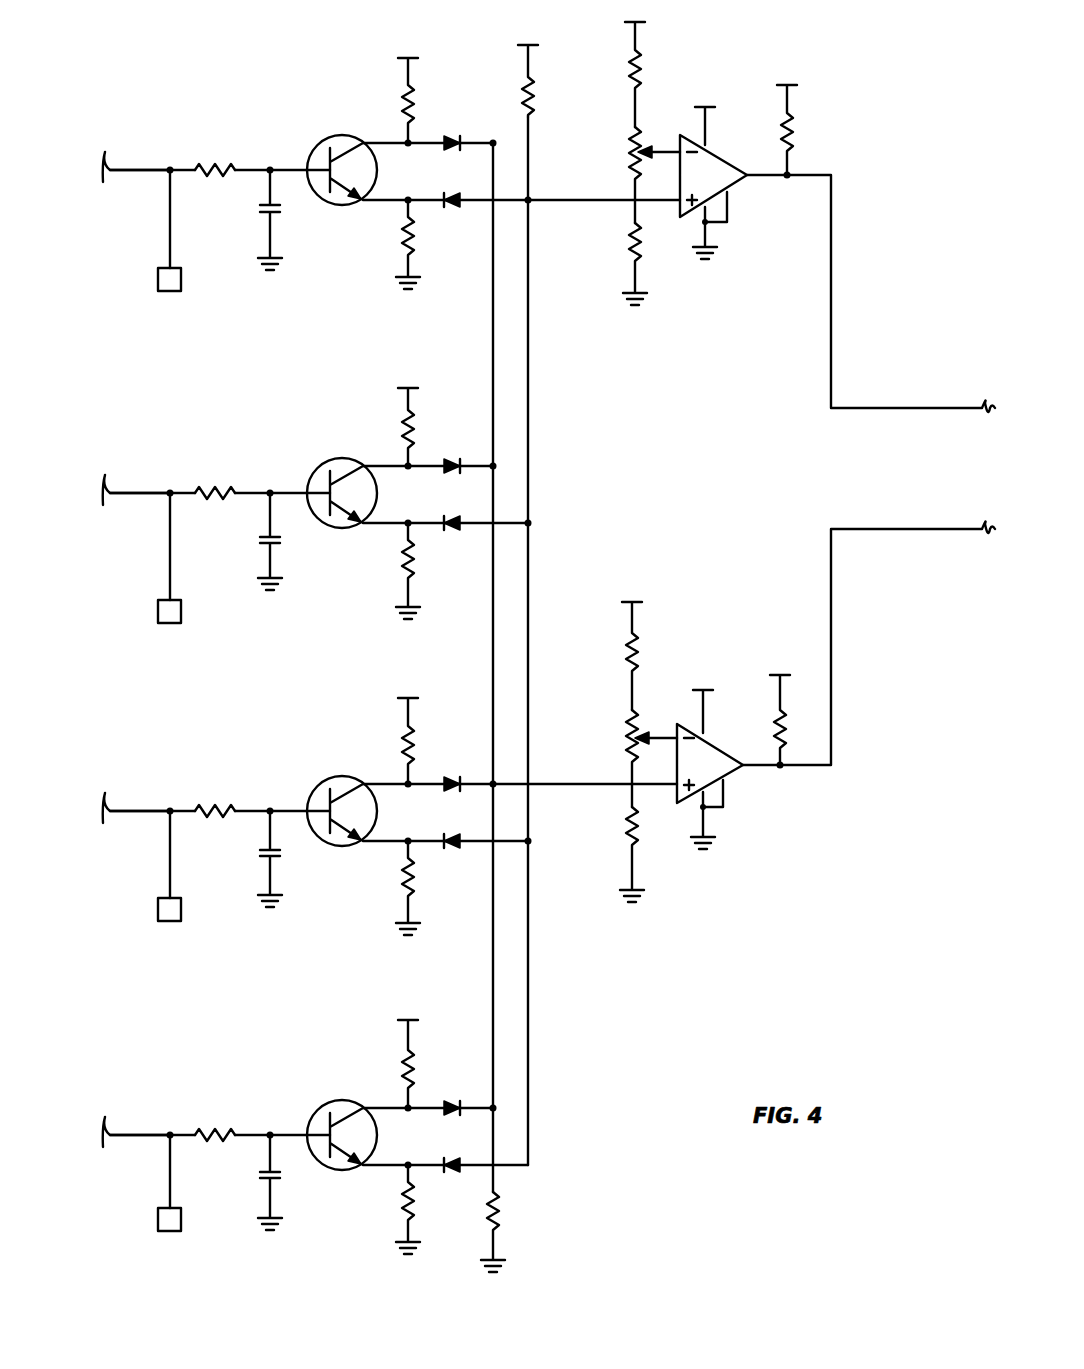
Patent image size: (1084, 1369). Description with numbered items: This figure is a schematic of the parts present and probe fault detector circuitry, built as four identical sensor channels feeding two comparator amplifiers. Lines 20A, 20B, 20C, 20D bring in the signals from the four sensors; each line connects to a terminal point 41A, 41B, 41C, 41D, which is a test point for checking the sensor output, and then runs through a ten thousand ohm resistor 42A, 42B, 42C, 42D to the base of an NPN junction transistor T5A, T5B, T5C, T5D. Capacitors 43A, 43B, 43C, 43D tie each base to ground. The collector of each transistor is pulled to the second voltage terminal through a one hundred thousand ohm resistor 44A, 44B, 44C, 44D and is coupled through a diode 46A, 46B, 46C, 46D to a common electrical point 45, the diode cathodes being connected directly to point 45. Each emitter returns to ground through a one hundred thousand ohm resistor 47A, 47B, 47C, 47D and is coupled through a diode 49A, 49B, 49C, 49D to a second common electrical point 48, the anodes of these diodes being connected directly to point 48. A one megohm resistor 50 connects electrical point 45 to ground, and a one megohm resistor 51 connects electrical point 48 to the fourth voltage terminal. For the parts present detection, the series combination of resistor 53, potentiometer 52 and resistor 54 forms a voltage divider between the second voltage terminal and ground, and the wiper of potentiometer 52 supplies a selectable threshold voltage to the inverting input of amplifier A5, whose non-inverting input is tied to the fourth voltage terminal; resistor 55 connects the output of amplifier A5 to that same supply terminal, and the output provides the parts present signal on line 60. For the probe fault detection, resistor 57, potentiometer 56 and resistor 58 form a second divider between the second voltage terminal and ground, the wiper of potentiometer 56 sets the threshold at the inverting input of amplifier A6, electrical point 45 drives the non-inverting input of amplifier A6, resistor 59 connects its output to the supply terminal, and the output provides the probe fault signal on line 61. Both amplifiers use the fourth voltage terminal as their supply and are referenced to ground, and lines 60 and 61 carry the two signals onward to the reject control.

The line 20A is at (143, 168).
The line 20B is at (130, 526).
The line 20C is at (130, 847).
The line 20D is at (130, 1096).
The terminal point 41A is at (181, 278).
The terminal point 41B is at (196, 581).
The terminal point 41C is at (203, 894).
The terminal point 41D is at (198, 1215).
The resistor 42A is at (215, 160).
The resistor 42B is at (193, 466).
The resistor 42C is at (187, 789).
The resistor 42D is at (218, 1099).
The capacitor 43A is at (280, 217).
The capacitor 43B is at (304, 541).
The capacitor 43C is at (306, 861).
The capacitor 43D is at (244, 1182).
The transistor T5A is at (333, 138).
The transistor T5B is at (319, 472).
The transistor T5C is at (325, 789).
The transistor T5D is at (329, 1105).
The resistor 44A is at (413, 98).
The resistor 44B is at (383, 415).
The resistor 44C is at (385, 729).
The resistor 44D is at (379, 1052).
The diode 46A is at (448, 135).
The diode 46B is at (465, 438).
The diode 46C is at (453, 754).
The diode 46D is at (454, 1077).
The resistor 47A is at (413, 230).
The resistor 47B is at (437, 571).
The resistor 47C is at (440, 888).
The resistor 47D is at (380, 1209).
The diode 49A is at (453, 188).
The diode 49B is at (425, 509).
The diode 49C is at (425, 826).
The diode 49D is at (426, 1147).
The electrical point 45 is at (502, 770).
The electrical point 48 is at (530, 523).
The resistor 50 is at (497, 1210).
The resistor 51 is at (532, 97).
The potentiometer 52 is at (630, 148).
The resistor 53 is at (630, 63).
The resistor 54 is at (628, 248).
The resistor 55 is at (792, 128).
The amplifier A5 is at (737, 187).
The potentiometer 56 is at (628, 730).
The resistor 57 is at (630, 657).
The resistor 58 is at (628, 835).
The resistor 59 is at (775, 733).
The amplifier A6 is at (730, 773).
The line 60 is at (831, 308).
The line 61 is at (831, 562).